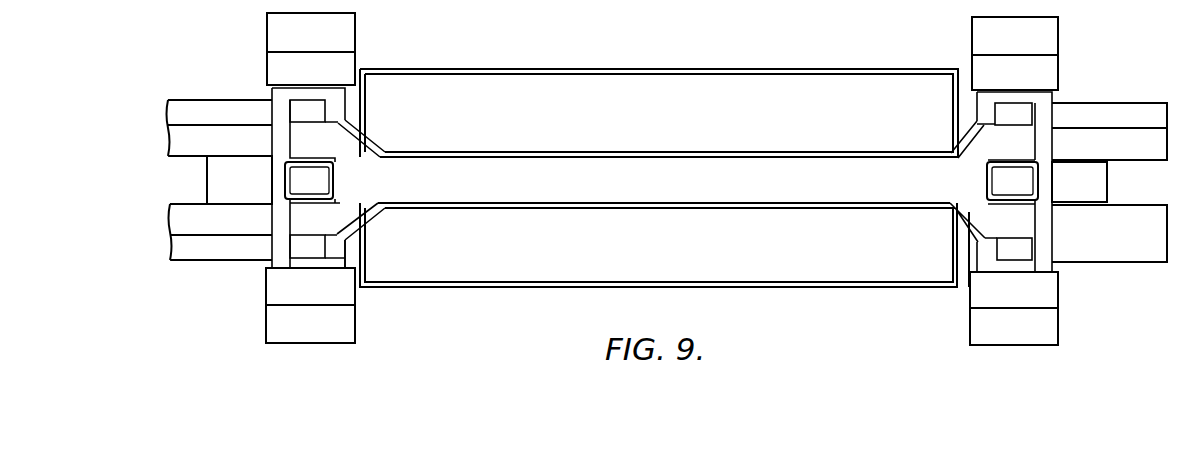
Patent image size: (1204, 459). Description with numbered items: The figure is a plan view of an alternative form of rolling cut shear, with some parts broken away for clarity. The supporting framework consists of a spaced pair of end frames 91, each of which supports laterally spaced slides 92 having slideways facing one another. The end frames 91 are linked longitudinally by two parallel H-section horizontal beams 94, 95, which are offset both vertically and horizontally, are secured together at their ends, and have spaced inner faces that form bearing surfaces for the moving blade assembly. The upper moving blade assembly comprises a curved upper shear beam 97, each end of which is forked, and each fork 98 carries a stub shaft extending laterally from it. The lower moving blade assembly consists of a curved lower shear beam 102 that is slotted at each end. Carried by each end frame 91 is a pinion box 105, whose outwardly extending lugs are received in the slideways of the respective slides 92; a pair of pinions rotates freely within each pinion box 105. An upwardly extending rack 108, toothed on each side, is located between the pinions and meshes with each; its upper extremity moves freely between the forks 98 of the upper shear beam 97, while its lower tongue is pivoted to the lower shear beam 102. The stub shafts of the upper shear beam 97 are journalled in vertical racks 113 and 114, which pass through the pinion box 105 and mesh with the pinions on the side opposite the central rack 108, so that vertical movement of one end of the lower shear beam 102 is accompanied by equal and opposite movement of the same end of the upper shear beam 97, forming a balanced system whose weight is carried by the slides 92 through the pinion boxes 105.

The end frame 91 is at (327, 42).
The slide 92 is at (325, 71).
The H-section horizontal beam 94 is at (616, 246).
The H-section horizontal beam 95 is at (611, 83).
The upper shear beam 97 is at (745, 190).
The fork 98 is at (315, 143).
The lower shear beam 102 is at (248, 172).
The pinion box 105 is at (337, 255).
The rack 108 is at (315, 181).
The rack 113 is at (300, 108).
The rack 114 is at (300, 248).